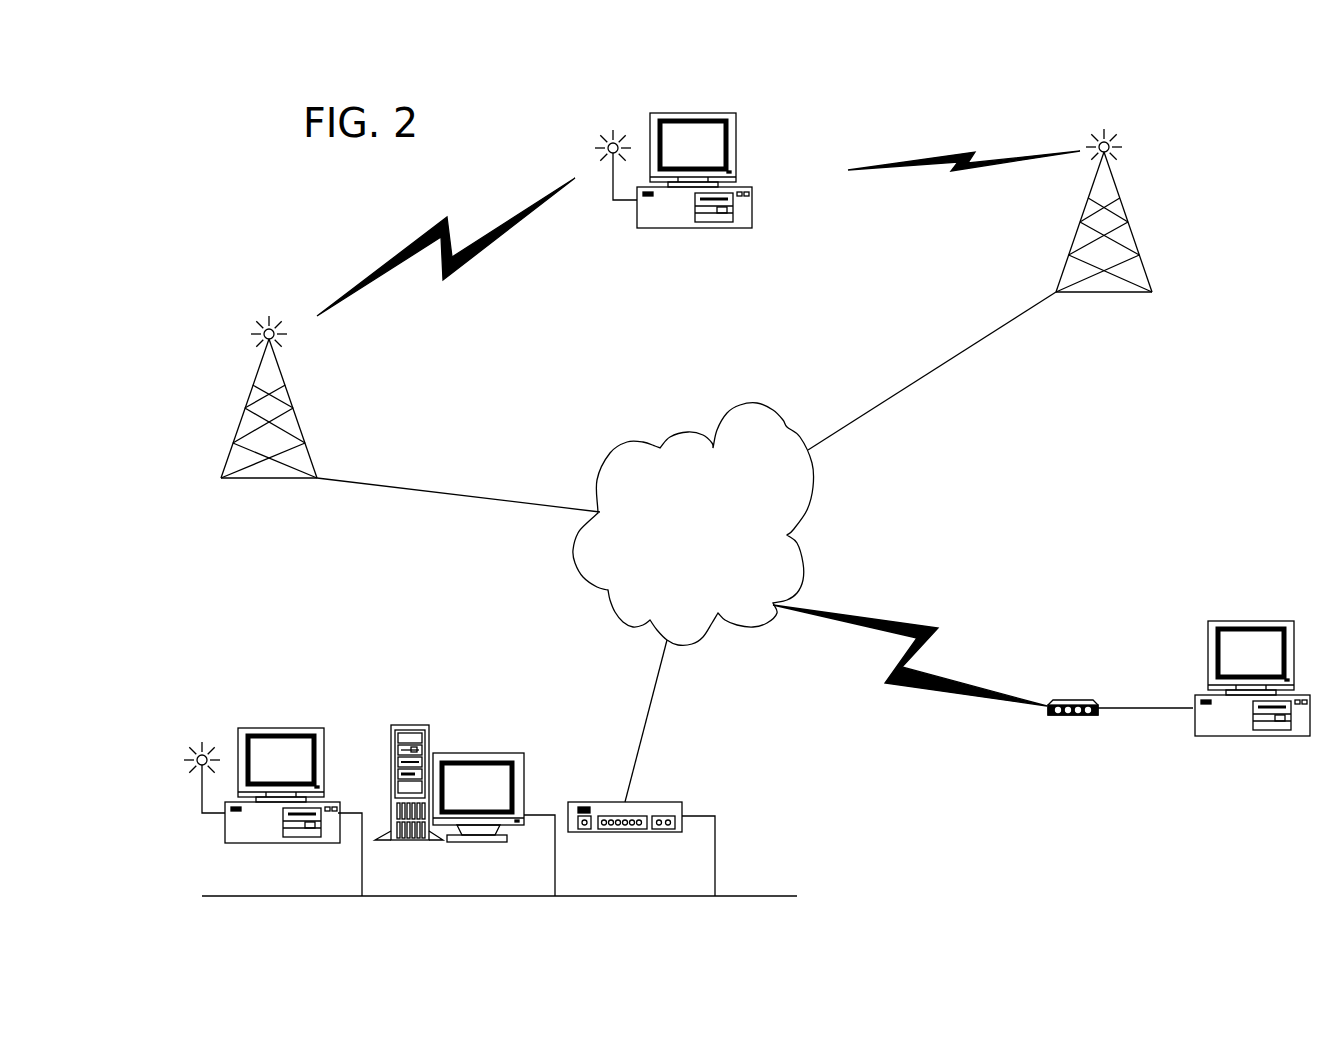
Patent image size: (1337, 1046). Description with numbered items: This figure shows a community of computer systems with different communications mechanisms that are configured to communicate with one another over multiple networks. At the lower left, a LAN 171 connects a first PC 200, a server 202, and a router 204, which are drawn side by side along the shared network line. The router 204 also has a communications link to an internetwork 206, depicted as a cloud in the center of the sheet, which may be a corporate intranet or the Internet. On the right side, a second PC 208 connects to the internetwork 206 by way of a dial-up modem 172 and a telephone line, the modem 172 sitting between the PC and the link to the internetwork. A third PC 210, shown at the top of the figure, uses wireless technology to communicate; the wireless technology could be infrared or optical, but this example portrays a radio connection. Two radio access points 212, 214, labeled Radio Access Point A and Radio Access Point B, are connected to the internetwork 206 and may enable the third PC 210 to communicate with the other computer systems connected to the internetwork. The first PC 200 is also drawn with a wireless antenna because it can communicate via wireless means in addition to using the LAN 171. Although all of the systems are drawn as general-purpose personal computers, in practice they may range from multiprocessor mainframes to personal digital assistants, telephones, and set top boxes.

The LAN 171 is at (758, 896).
The dial-up modem 172 is at (1075, 698).
The first PC 200 is at (280, 727).
The server 202 is at (475, 753).
The router 204 is at (667, 802).
The internetwork 206 is at (693, 432).
The second PC 208 is at (1250, 620).
The third PC 210 is at (693, 113).
The radio access point 212 is at (300, 420).
The radio access point 214 is at (1073, 243).